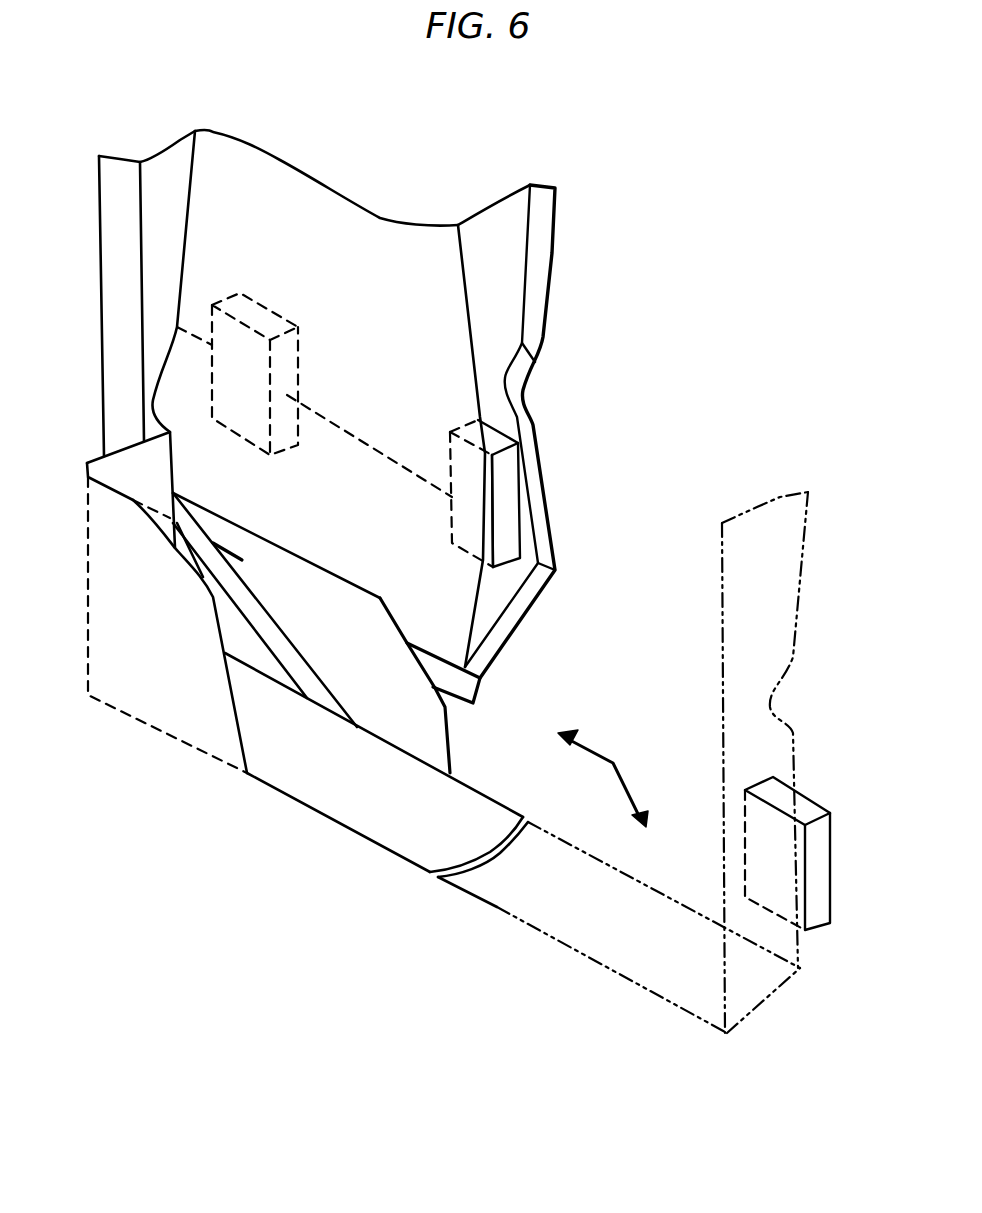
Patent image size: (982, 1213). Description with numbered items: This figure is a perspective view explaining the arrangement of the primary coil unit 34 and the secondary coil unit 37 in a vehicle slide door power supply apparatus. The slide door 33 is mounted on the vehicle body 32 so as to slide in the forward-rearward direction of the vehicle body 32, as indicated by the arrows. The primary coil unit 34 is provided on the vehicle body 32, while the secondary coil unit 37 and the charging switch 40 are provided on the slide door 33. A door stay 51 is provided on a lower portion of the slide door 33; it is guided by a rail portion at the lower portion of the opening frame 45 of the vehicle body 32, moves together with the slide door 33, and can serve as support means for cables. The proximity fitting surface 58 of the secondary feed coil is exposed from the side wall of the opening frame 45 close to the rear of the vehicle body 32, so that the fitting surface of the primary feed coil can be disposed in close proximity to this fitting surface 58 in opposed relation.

The vehicle body 32 is at (478, 787).
The slide door 33 is at (557, 223).
The primary coil unit 34 is at (770, 827).
The secondary coil unit 37 is at (510, 478).
The charging switch 40 is at (255, 317).
The opening frame 45 is at (122, 247).
The door stay 51 is at (373, 625).
The proximity fitting surface 58 is at (508, 523).